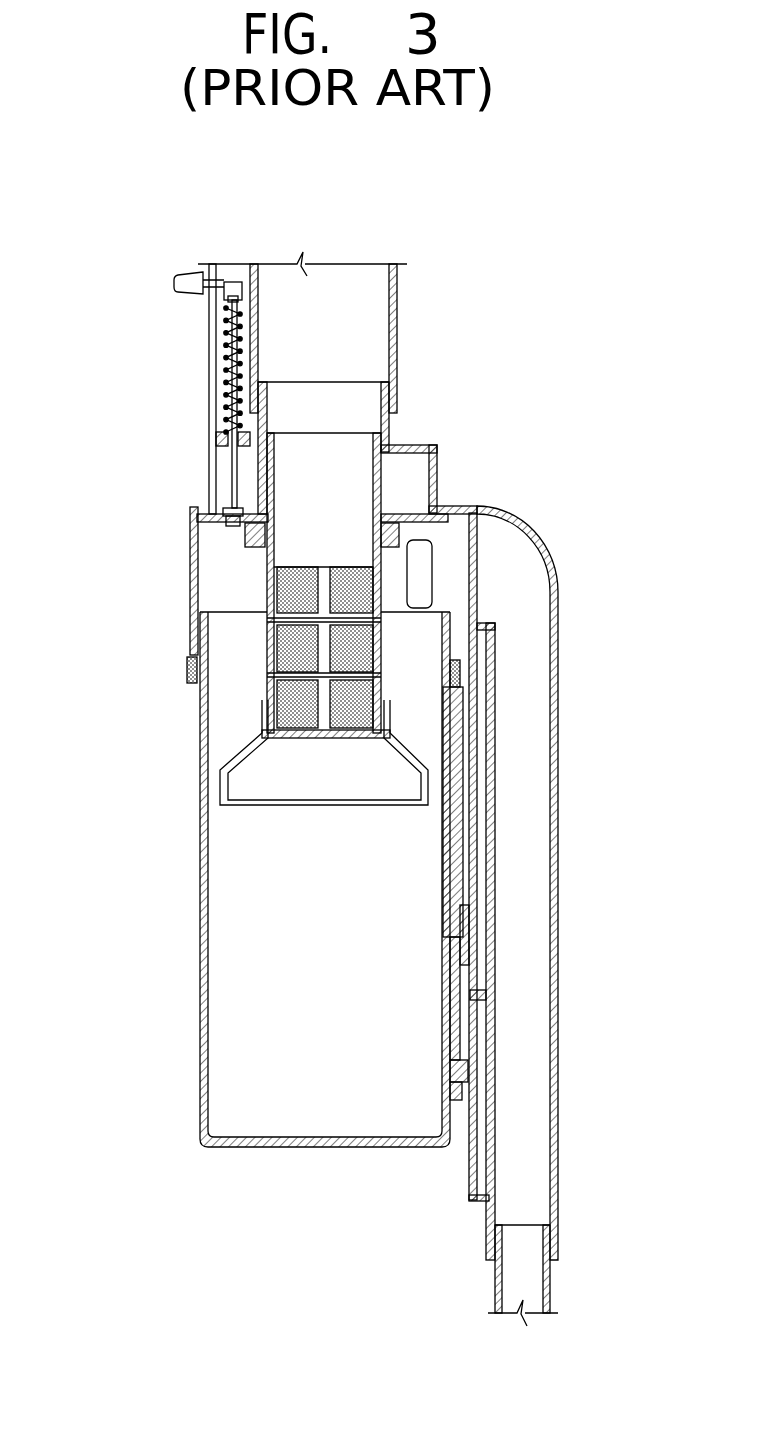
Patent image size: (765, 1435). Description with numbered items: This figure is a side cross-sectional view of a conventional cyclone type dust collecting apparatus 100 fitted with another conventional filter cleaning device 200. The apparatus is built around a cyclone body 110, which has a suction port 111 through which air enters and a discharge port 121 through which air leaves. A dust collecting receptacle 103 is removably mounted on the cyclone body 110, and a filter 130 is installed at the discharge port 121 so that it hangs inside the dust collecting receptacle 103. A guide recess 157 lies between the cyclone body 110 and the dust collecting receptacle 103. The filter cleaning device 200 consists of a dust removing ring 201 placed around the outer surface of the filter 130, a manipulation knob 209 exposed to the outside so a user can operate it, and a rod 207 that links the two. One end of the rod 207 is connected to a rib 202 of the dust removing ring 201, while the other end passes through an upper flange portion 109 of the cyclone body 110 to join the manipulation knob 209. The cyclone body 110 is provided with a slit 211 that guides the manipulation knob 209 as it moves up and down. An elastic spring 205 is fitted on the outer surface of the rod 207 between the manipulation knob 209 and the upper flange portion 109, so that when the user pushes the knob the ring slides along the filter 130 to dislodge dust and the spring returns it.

The cyclone type dust collecting apparatus 100 is at (471, 285).
The dust collecting receptacle 103 is at (203, 898).
The upper flange portion 109 is at (215, 427).
The cyclone body 110 is at (195, 555).
The suction port 111 is at (415, 573).
The discharge port 121 is at (382, 393).
The filter 130 is at (272, 587).
The guide recess 157 is at (453, 960).
The filter cleaning device 200 is at (152, 351).
The dust removing ring 201 is at (392, 498).
The rib 202 is at (193, 528).
The elastic spring 205 is at (227, 340).
The rod 207 is at (232, 368).
The manipulation knob 209 is at (185, 270).
The slit 211 is at (210, 312).